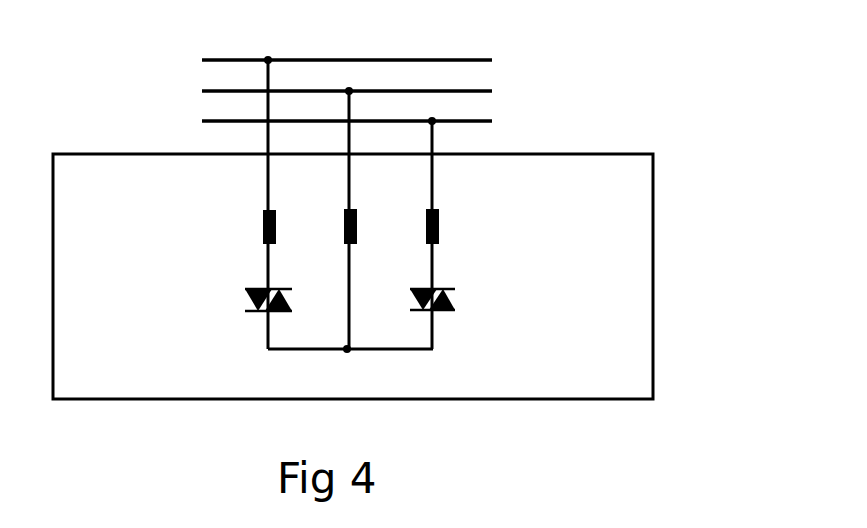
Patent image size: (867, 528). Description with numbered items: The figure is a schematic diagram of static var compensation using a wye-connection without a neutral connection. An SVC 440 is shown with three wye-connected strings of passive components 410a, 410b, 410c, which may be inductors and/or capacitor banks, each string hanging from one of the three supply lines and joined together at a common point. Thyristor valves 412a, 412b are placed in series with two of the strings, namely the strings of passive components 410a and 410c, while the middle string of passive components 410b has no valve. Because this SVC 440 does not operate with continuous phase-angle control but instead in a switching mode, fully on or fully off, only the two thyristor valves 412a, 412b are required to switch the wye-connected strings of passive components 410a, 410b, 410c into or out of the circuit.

The SVC 440 is at (653, 185).
The string of passive components 410a is at (263, 220).
The string of passive components 410b is at (396, 204).
The string of passive components 410c is at (439, 216).
The thyristor valve 412a is at (245, 293).
The thyristor valve 412b is at (455, 300).